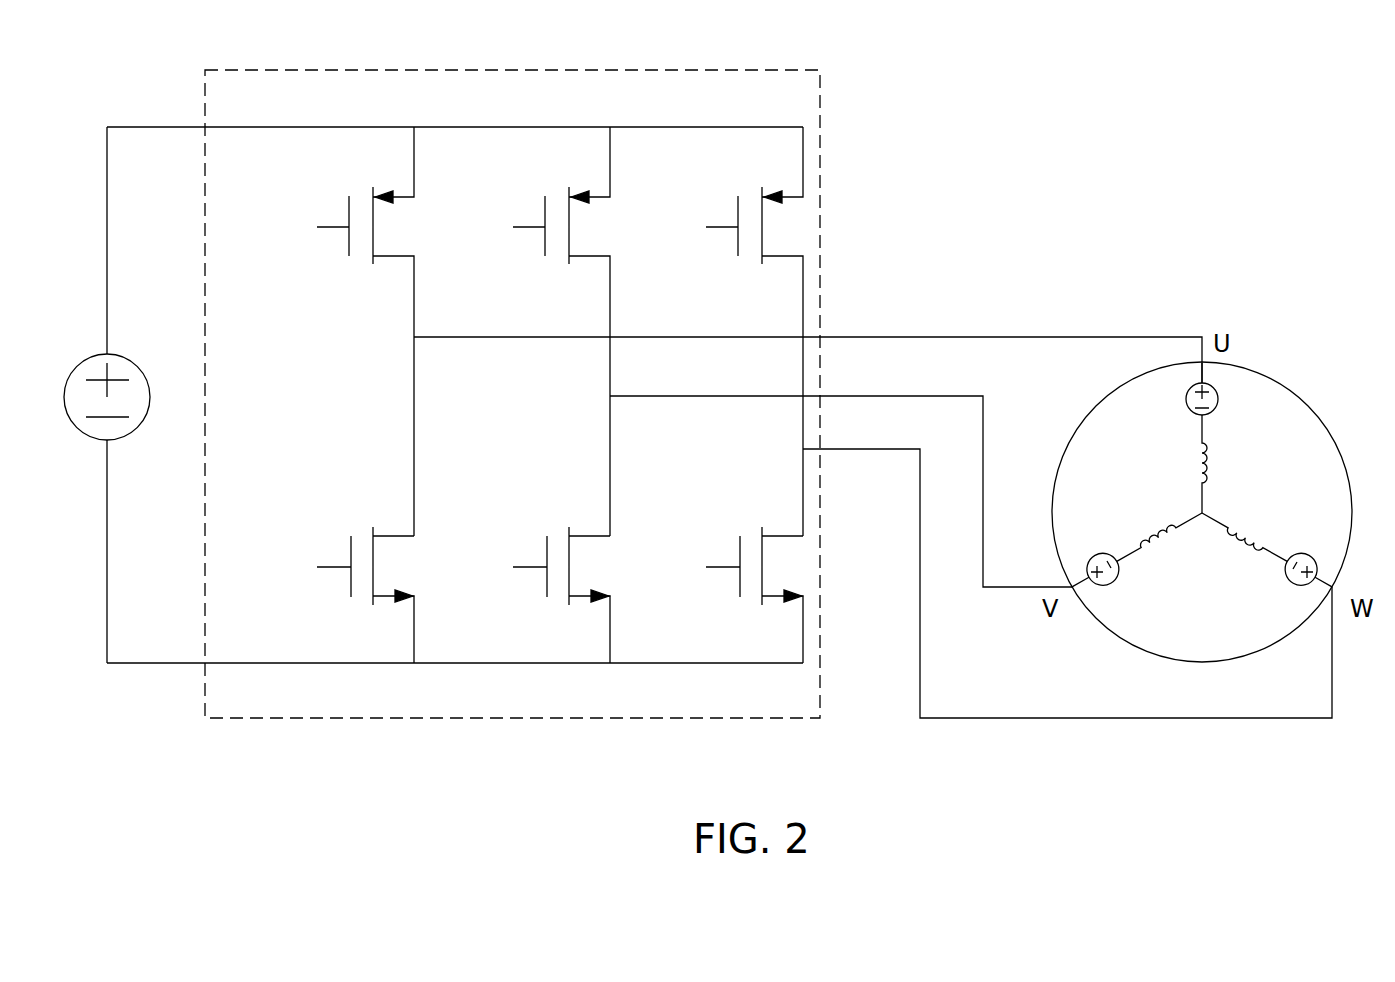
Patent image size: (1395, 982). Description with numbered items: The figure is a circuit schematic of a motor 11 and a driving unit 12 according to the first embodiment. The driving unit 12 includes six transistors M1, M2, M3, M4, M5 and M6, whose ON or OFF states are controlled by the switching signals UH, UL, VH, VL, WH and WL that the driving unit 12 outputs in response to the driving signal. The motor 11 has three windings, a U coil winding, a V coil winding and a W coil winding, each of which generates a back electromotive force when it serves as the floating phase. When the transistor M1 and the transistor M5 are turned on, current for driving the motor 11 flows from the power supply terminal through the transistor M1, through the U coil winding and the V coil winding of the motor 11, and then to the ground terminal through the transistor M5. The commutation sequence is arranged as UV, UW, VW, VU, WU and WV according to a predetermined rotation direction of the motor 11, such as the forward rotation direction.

The motor 11 is at (1202, 486).
The driving unit 12 is at (503, 394).
The transistor M1 is at (340, 331).
The transistor M2 is at (538, 331).
The transistor M3 is at (729, 331).
The transistor M4 is at (340, 595).
The transistor M5 is at (538, 595).
The transistor M6 is at (729, 595).